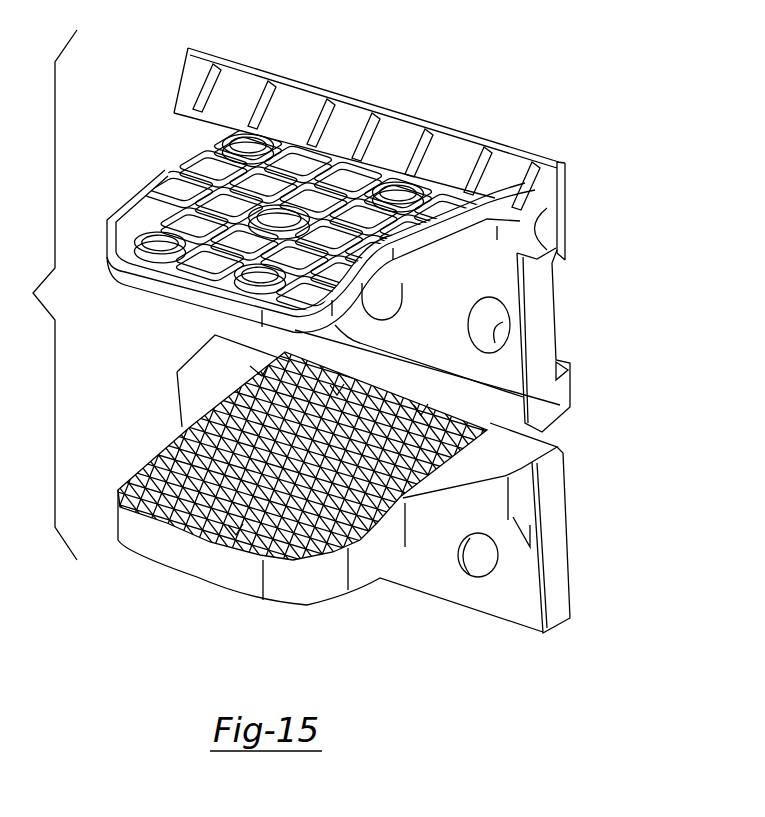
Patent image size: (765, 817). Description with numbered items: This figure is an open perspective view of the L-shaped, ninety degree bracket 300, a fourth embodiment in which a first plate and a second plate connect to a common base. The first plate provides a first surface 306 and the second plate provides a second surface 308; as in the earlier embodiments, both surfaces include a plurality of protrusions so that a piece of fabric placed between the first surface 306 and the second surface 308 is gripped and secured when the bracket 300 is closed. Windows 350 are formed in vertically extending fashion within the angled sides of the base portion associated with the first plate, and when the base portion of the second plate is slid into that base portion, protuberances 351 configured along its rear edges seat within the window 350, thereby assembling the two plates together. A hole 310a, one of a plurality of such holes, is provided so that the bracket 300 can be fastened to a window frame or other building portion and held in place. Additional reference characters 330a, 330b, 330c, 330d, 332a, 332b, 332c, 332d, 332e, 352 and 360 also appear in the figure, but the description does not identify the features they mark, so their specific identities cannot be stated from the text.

The L-shaped bracket 300 is at (602, 148).
The first surface 306 is at (107, 262).
The second surface 308 is at (352, 540).
The hole 310a is at (500, 332).
The first recess 330a is at (160, 243).
The second recess 330b is at (247, 140).
The third recess 330c is at (270, 210).
The fourth recess 330d is at (401, 190).
The first tooth row 332a is at (167, 457).
The second tooth row 332b is at (258, 373).
The third tooth row 332c is at (337, 387).
The fourth tooth row 332d is at (422, 410).
The fifth tooth row 332e is at (235, 532).
The window 350 is at (548, 262).
The protuberance 351 is at (570, 575).
The notch 352 is at (540, 208).
The lower plate 360 is at (160, 522).